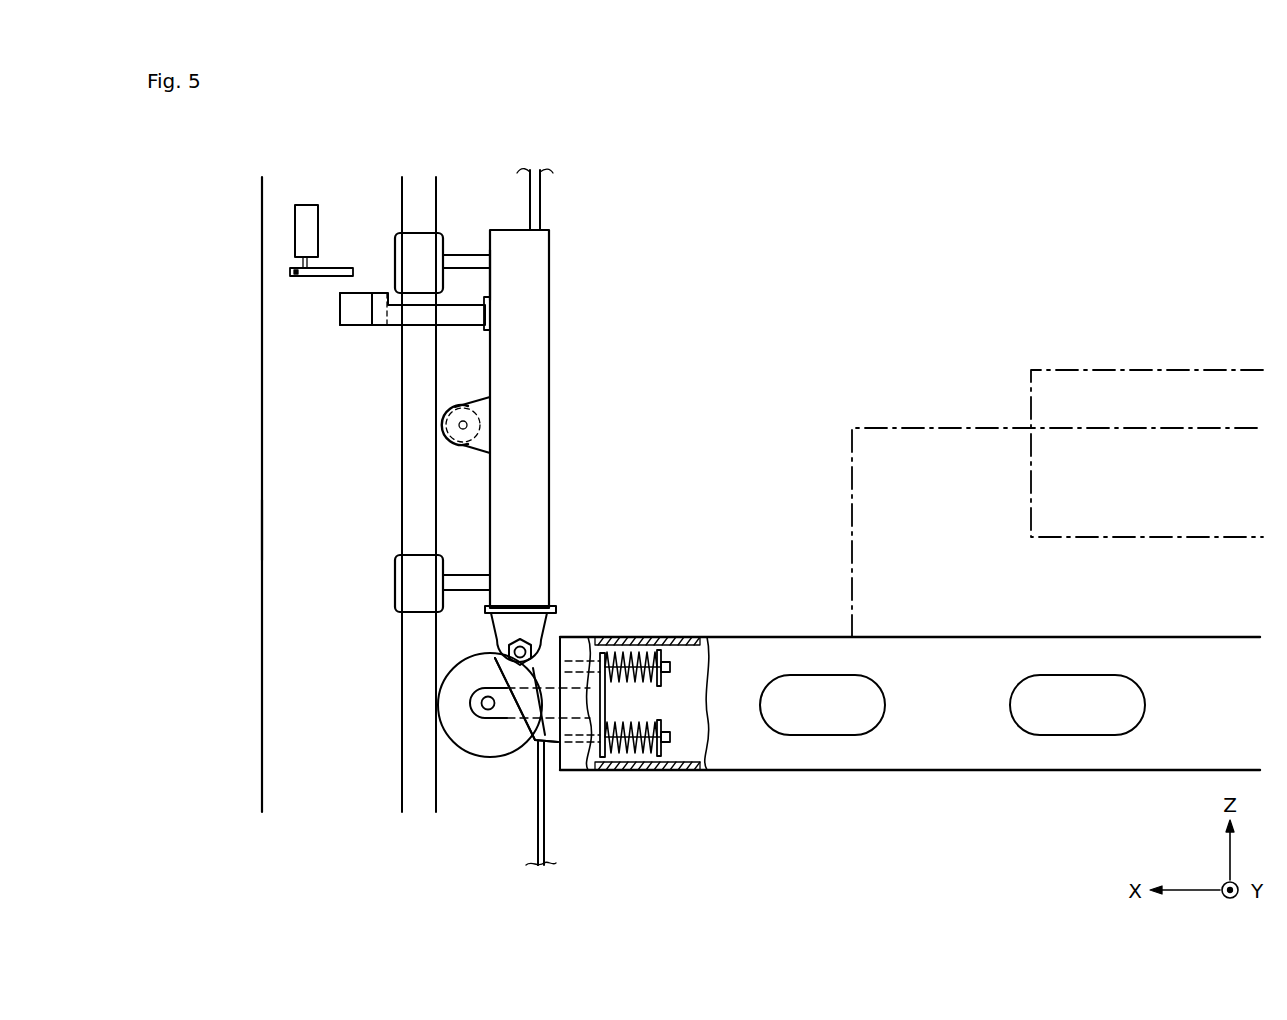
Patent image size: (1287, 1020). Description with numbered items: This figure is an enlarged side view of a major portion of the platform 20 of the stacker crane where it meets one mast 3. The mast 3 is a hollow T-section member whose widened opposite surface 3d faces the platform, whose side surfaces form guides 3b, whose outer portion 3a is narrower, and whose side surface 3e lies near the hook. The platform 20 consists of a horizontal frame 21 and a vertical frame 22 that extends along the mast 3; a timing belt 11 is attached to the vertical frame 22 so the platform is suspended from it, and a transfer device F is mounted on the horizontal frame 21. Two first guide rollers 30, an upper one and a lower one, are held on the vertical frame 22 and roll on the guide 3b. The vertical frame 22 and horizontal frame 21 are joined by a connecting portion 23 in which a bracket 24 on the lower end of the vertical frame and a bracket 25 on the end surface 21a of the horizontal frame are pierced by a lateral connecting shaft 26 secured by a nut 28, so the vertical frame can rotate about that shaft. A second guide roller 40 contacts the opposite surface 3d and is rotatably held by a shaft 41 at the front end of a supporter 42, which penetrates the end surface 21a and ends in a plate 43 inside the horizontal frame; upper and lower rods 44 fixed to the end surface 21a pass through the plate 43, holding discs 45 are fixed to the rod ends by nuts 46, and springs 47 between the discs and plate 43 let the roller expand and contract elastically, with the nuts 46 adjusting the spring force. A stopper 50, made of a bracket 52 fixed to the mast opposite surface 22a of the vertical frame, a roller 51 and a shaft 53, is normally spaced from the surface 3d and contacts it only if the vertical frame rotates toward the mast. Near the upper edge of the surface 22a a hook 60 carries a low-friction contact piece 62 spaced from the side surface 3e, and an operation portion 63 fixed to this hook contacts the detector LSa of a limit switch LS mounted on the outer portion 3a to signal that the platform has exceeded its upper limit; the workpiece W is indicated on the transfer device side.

The mast 3 is at (255, 401).
The outer portion 3a is at (290, 527).
The guide 3b is at (405, 489).
The opposite surface 3d is at (440, 465).
The side surface 3e is at (392, 363).
The limit switch LS is at (305, 222).
The detector LSa is at (318, 282).
The hook 60 is at (388, 330).
The contact piece 62 is at (372, 326).
The operation portion 63 is at (340, 310).
The first guide roller 30 is at (400, 250).
The vertical frame 22 is at (549, 265).
The mast opposite surface 22a is at (490, 282).
The timing belt 11 is at (540, 200).
The end surface 21a is at (552, 772).
The stopper 50 is at (561, 381).
The roller 51 is at (458, 407).
The bracket 52 is at (482, 445).
The shaft 53 is at (480, 422).
The bracket 24 is at (518, 620).
The nut 28 is at (495, 625).
The connecting shaft 26 is at (546, 670).
The connecting portion 23 is at (640, 462).
The bracket 25 is at (590, 655).
The second guide roller 40 is at (456, 680).
The shaft 41 is at (481, 704).
The supporter 42 is at (510, 748).
The platform 20 is at (938, 771).
The horizontal frame 21 is at (1060, 772).
The plate 43 is at (606, 706).
The rod 44 is at (603, 660).
The spring 47 is at (632, 663).
The holding disc 45 is at (662, 656).
The nut 46 is at (672, 666).
The transfer device F is at (886, 428).
The workpiece W is at (1082, 370).